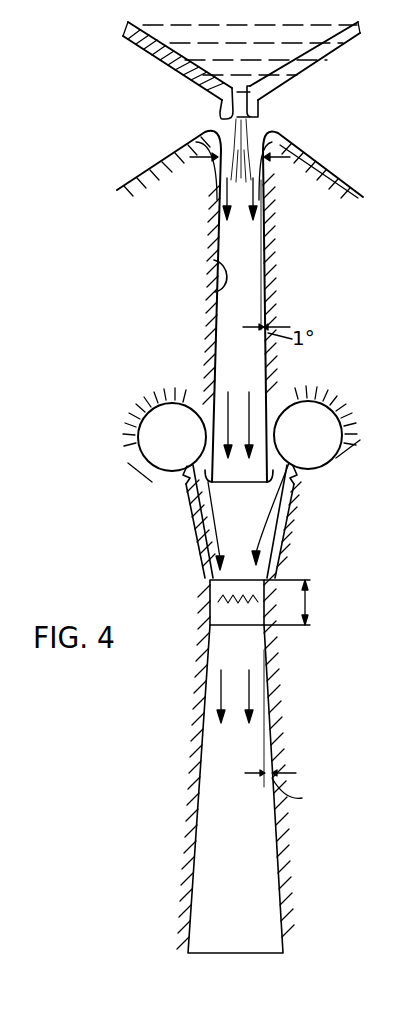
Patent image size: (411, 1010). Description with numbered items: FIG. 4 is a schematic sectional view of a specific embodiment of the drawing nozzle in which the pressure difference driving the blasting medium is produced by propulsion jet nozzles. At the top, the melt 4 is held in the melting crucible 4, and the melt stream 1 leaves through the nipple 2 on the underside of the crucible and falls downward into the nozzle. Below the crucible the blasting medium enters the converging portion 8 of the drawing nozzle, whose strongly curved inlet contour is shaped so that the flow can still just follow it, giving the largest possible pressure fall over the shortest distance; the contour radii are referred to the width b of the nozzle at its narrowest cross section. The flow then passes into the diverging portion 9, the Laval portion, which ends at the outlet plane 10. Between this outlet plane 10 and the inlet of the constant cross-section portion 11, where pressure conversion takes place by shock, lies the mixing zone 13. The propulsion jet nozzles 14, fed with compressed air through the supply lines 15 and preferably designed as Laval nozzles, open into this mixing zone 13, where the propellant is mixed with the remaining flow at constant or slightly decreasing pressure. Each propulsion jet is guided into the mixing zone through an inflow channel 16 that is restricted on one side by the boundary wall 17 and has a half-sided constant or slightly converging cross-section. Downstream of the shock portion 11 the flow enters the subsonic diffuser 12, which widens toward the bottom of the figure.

The melt stream 1 is at (233, 128).
The nipple on the underside of the crucible 2 is at (257, 107).
The melting crucible 4 is at (176, 68).
The converging portion of the drawing nozzle 8 is at (213, 131).
The diverging portion of the drawing nozzle (Laval portion) 9 is at (214, 260).
The width of the drawing nozzle at its narrowest cross section b is at (283, 170).
The outlet plane of the diverging portion 10 is at (196, 529).
The portion of the drawing nozzle with a constant cross-section (shock portion) 11 is at (307, 603).
The subsonic diffuser 12 is at (267, 884).
The mixing zone for the blasting medium and propulsion jet medium 13 is at (238, 520).
The propulsion jet nozzle 14 is at (187, 467).
The supply line for the propellant 15 is at (306, 414).
The inflow channel for the propulsion jets 16 is at (277, 525).
The boundary wall of the inflow channel 17 is at (281, 552).